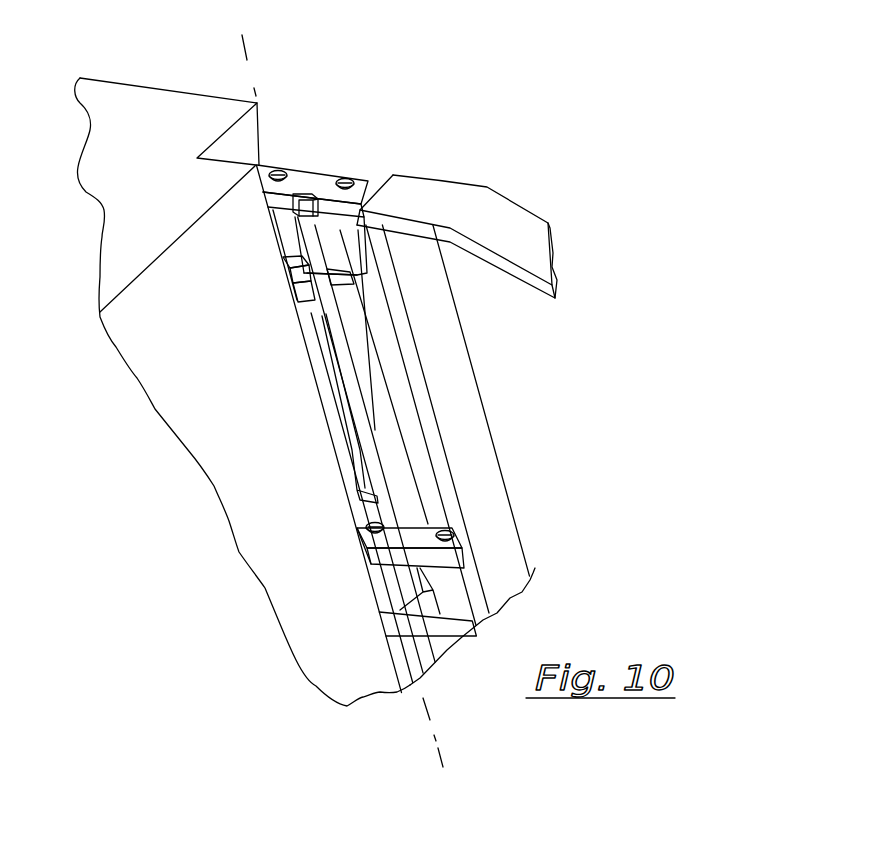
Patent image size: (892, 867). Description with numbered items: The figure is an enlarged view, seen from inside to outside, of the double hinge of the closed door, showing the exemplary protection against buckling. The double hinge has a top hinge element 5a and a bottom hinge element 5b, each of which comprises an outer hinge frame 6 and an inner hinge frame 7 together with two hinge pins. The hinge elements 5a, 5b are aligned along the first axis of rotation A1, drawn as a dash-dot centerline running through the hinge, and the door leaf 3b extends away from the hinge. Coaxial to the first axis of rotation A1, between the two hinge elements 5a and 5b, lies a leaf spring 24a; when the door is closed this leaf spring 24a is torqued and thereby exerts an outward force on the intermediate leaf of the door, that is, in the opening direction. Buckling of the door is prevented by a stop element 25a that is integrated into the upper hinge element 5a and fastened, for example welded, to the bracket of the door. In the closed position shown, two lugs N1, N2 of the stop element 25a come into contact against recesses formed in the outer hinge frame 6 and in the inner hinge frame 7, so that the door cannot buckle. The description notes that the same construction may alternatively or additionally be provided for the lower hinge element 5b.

The first axis of rotation A1 is at (240, 50).
The lug N1 is at (303, 212).
The lug N2 is at (317, 276).
The top hinge element 5a is at (332, 158).
The bottom hinge element 5b is at (353, 603).
The outer hinge frame 6 is at (318, 180).
The inner hinge frame 7 is at (357, 278).
The door leaf 3b is at (505, 227).
The leaf spring 24a is at (323, 338).
The stop element 25a is at (338, 255).